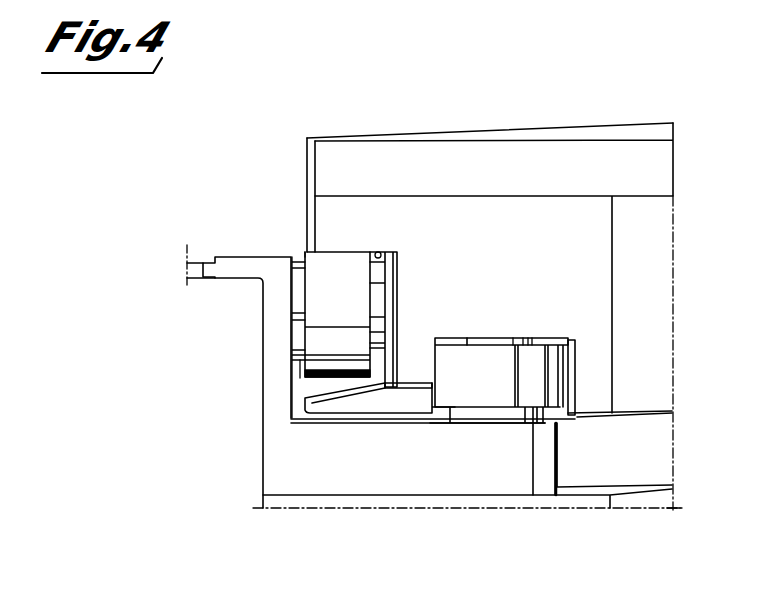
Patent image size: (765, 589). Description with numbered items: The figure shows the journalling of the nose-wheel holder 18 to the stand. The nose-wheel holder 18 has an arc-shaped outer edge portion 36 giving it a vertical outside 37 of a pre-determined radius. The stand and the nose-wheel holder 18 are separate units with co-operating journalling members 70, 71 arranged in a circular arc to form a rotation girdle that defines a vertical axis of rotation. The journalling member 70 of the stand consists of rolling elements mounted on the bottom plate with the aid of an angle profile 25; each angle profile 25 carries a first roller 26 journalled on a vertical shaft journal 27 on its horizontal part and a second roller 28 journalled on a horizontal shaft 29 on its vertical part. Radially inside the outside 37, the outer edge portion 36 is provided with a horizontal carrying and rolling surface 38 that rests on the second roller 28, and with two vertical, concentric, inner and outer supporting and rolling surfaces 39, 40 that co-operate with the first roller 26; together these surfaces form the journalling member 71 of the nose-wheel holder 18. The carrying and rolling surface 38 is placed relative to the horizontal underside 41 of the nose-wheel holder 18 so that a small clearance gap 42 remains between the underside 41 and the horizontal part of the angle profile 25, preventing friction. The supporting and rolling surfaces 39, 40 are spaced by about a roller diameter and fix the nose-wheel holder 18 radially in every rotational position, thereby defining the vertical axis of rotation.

The nose-wheel holder 18 is at (415, 130).
The angle profile 25 is at (272, 353).
The first roller 26 is at (563, 377).
The vertical shaft journal 27 is at (497, 338).
The second roller 28 is at (335, 252).
The horizontal shaft 29 is at (382, 295).
The outer edge portion 36 is at (354, 135).
The vertical outside 37 is at (305, 156).
The horizontal carrying and rolling surface 38 is at (381, 252).
The inner supporting and rolling surface 39 is at (437, 338).
The outer supporting and rolling surface 40 is at (572, 338).
The horizontal underside 41 is at (348, 415).
The clearance gap 42 is at (387, 415).
The journalling member of the stand 70 is at (300, 370).
The journalling member of the nose-wheel holder 71 is at (573, 418).